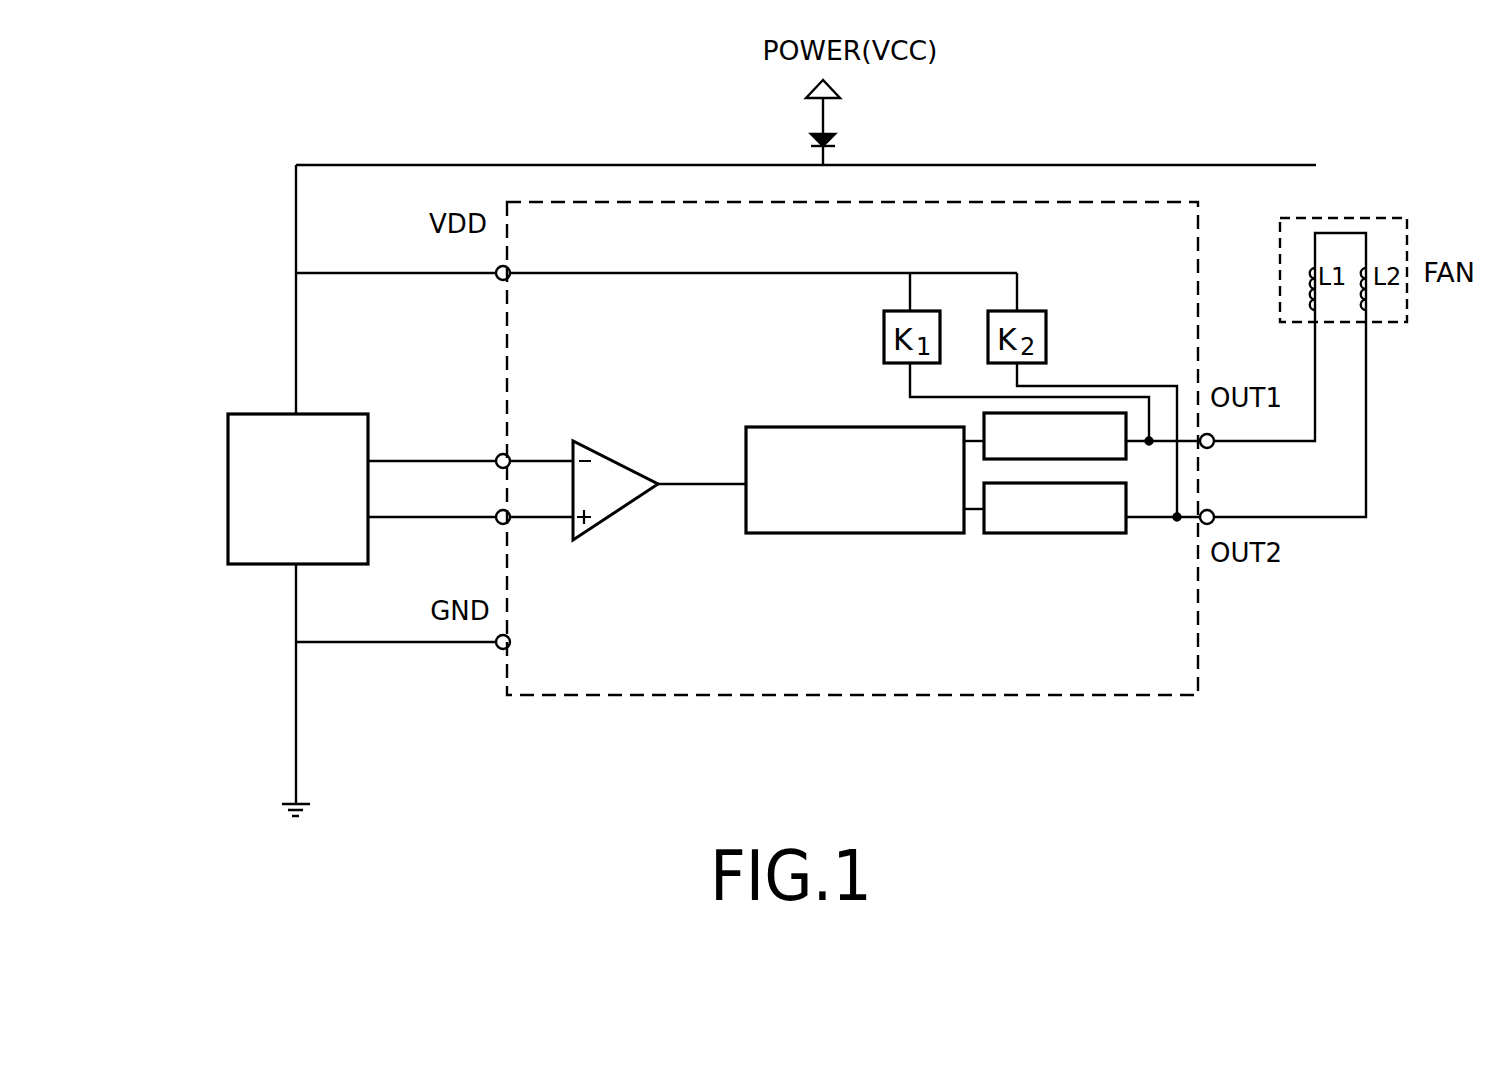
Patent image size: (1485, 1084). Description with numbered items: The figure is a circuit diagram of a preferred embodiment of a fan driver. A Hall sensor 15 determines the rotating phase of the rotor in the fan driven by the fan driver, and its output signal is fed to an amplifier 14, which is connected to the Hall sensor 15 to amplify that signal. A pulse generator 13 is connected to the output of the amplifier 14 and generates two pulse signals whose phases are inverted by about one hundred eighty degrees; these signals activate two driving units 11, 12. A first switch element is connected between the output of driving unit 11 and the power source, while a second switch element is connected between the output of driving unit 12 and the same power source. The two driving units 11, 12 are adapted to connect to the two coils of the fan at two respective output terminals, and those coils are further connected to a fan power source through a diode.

The driving unit 11 is at (1045, 436).
The driving unit 12 is at (1045, 508).
The pulse generator 13 is at (852, 526).
The amplifier 14 is at (606, 513).
The Hall sensor 15 is at (233, 539).